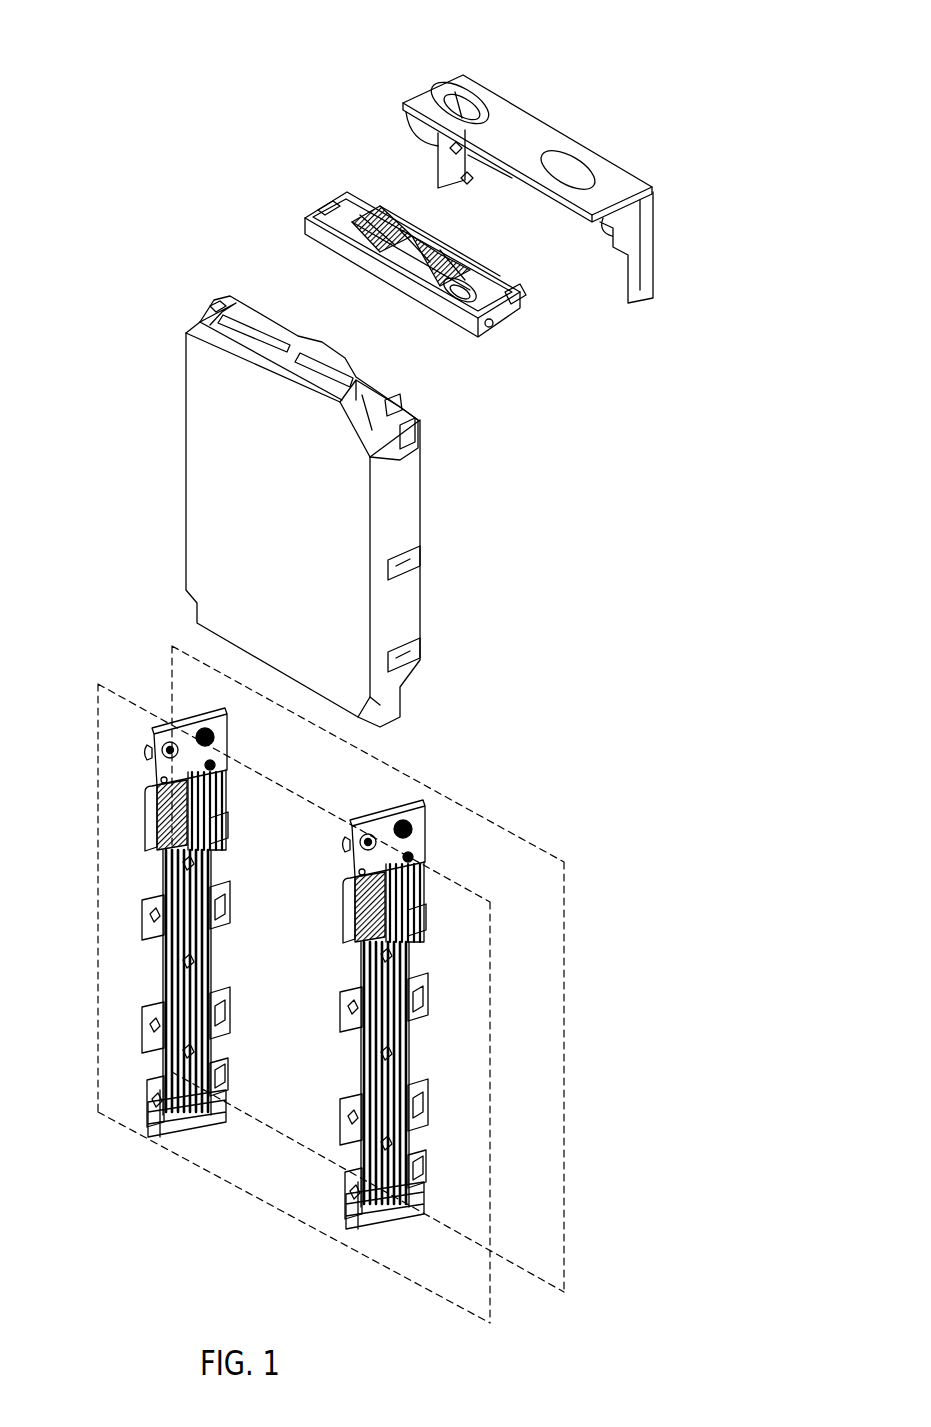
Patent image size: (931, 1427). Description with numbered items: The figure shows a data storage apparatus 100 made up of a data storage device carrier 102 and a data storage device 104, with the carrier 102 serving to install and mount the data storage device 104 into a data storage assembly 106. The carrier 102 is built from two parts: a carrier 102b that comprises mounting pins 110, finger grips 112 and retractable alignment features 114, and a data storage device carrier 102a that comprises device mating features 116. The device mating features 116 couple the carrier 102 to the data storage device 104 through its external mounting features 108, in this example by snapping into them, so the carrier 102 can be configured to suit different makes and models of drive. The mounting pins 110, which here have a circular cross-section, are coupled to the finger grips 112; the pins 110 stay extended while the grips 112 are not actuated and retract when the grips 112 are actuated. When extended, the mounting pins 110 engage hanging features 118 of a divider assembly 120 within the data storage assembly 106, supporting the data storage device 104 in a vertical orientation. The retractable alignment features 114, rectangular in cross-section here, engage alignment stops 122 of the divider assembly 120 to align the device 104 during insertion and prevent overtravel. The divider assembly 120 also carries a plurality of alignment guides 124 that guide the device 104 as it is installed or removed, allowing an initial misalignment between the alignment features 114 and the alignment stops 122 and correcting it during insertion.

The data storage apparatus 100 is at (206, 228).
The data storage device carrier 102 is at (368, 94).
The data storage device carrier 102a is at (509, 158).
The carrier 102b is at (450, 238).
The data storage device 104 is at (311, 511).
The data storage assembly 106 is at (120, 718).
The external mounting features 108 is at (432, 455).
The mounting pins 110 is at (494, 326).
The finger grips 112 is at (376, 213).
The retractable alignment features 114 is at (522, 300).
The device mating features 116 is at (442, 150).
The hanging features 118 is at (220, 733).
The divider assembly 120 is at (311, 945).
The alignment stops 122 is at (160, 779).
The alignment guides 124 is at (230, 830).